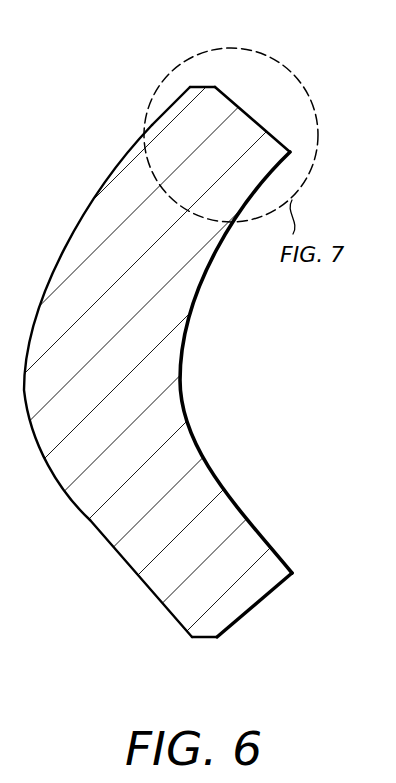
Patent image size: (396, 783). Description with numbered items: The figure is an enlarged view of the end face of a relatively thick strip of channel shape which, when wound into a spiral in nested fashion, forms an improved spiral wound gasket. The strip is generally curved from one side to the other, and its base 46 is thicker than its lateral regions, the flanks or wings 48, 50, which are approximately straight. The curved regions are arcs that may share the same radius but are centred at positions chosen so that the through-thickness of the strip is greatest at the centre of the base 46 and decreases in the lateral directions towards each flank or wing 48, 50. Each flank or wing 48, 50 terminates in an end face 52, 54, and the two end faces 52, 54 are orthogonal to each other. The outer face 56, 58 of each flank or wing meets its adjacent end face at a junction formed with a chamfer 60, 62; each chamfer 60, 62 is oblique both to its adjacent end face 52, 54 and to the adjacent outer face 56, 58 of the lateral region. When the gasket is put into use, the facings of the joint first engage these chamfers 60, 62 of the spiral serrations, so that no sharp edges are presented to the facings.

The base of the strip 46 is at (158, 363).
The flank or wing 48 is at (128, 192).
The flank or wing 50 is at (130, 530).
The end face 52 is at (253, 117).
The end face 54 is at (248, 608).
The outer face 56 is at (158, 120).
The outer face 58 is at (158, 602).
The chamfer 60 is at (205, 86).
The chamfer 62 is at (205, 638).